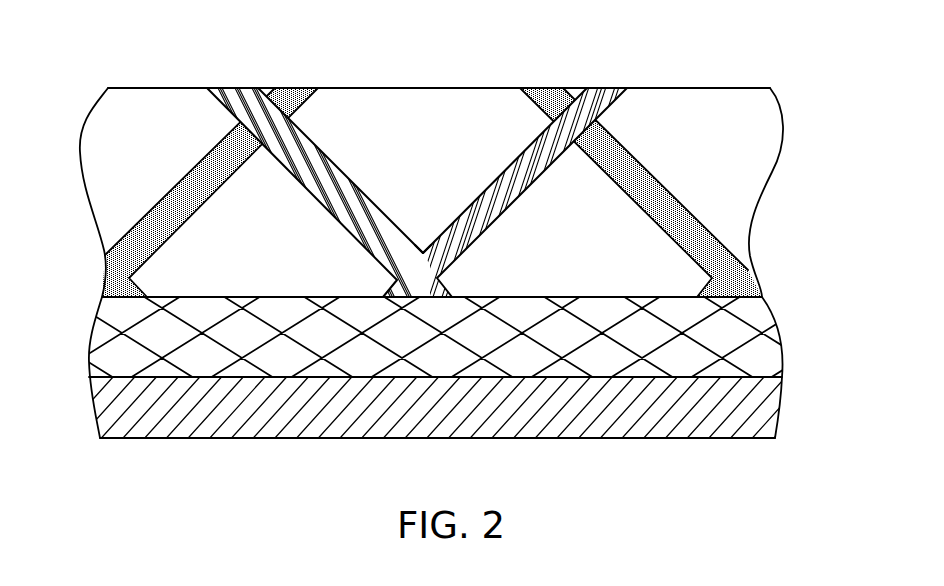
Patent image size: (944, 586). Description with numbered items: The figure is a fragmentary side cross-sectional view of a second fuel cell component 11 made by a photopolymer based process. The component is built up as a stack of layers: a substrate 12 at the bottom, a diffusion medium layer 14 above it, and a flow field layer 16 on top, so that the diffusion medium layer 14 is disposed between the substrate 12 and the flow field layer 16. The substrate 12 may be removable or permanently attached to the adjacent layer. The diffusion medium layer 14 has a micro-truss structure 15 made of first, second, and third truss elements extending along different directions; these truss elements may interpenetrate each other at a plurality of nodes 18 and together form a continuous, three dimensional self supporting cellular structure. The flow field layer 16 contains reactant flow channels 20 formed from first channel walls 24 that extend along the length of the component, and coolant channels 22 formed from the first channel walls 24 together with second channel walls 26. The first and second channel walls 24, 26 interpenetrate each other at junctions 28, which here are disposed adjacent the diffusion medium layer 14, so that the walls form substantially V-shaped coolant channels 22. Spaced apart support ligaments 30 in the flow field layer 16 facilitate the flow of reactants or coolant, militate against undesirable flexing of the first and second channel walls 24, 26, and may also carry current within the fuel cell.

The second fuel cell component 11 is at (822, 111).
The substrate 12 is at (783, 413).
The diffusion medium layer 14 is at (785, 351).
The micro-truss structure 15 is at (665, 345).
The flow field layer 16 is at (787, 84).
The nodes 18 is at (242, 357).
The reactant flow channels 20 is at (154, 114).
The coolant channels 22 is at (434, 110).
The first channel walls 24 is at (330, 170).
The second channel walls 26 is at (509, 206).
The junctions 28 is at (423, 250).
The support ligaments 30 is at (213, 195).